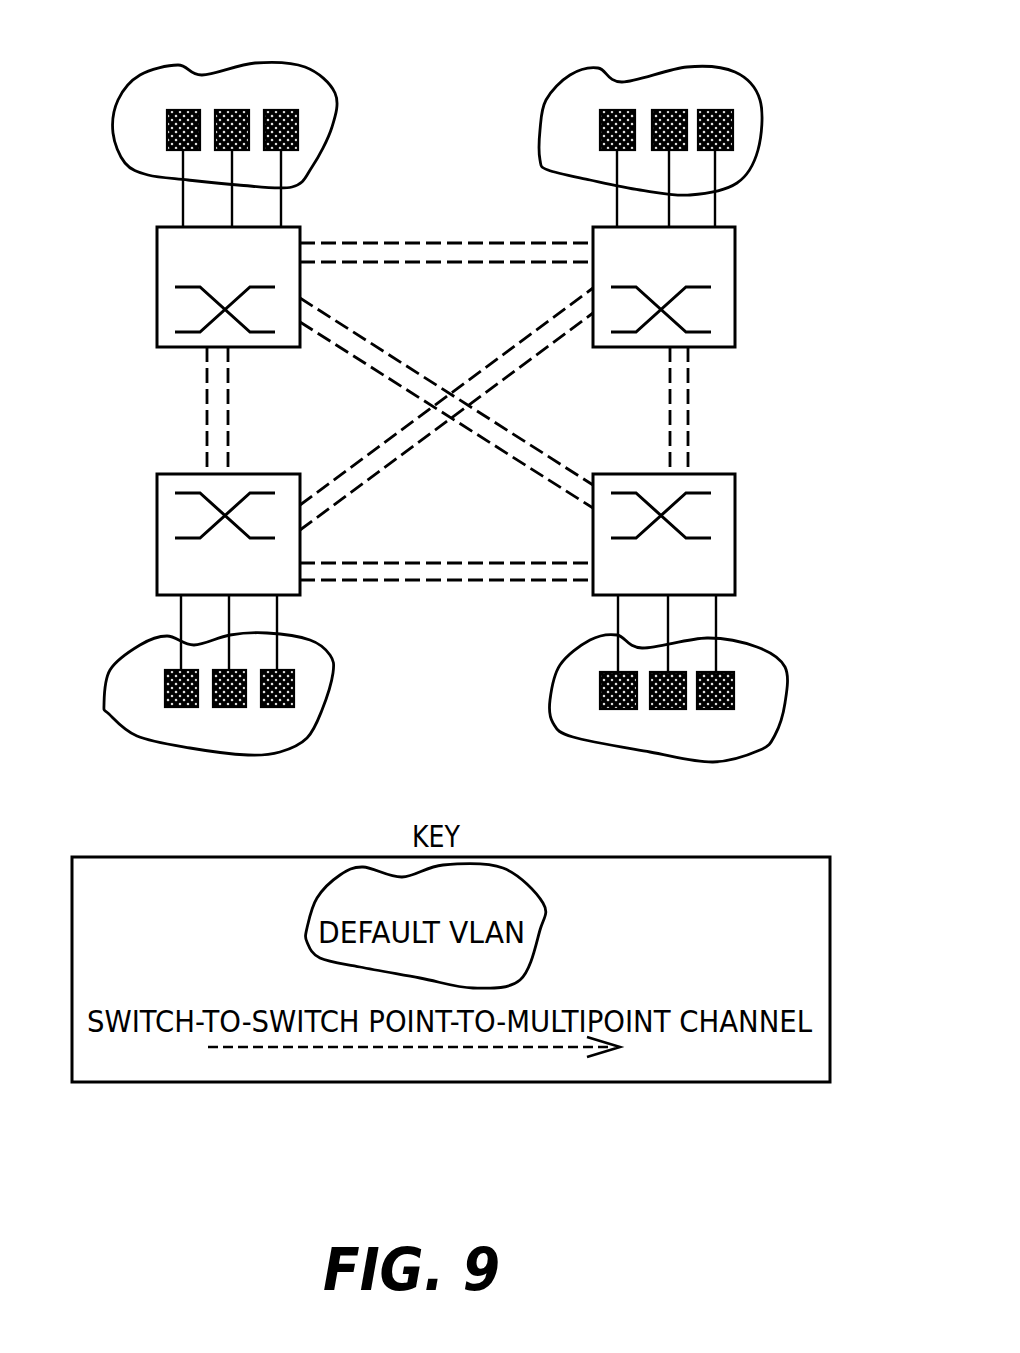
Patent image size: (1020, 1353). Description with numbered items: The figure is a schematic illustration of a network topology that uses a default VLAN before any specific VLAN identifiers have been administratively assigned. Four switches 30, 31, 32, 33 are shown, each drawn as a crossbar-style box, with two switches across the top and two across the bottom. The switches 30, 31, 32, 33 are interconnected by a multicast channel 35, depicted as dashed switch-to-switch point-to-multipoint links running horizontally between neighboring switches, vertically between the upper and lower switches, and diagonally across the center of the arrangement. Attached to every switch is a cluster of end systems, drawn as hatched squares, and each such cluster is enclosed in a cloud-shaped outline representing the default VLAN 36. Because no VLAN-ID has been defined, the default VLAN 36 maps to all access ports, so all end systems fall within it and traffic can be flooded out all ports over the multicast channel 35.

The switch 30 is at (300, 227).
The switch 31 is at (735, 227).
The switch 32 is at (300, 594).
The switch 33 is at (735, 595).
The multicast channel 35 is at (442, 263).
The default VLAN 36 is at (318, 63).